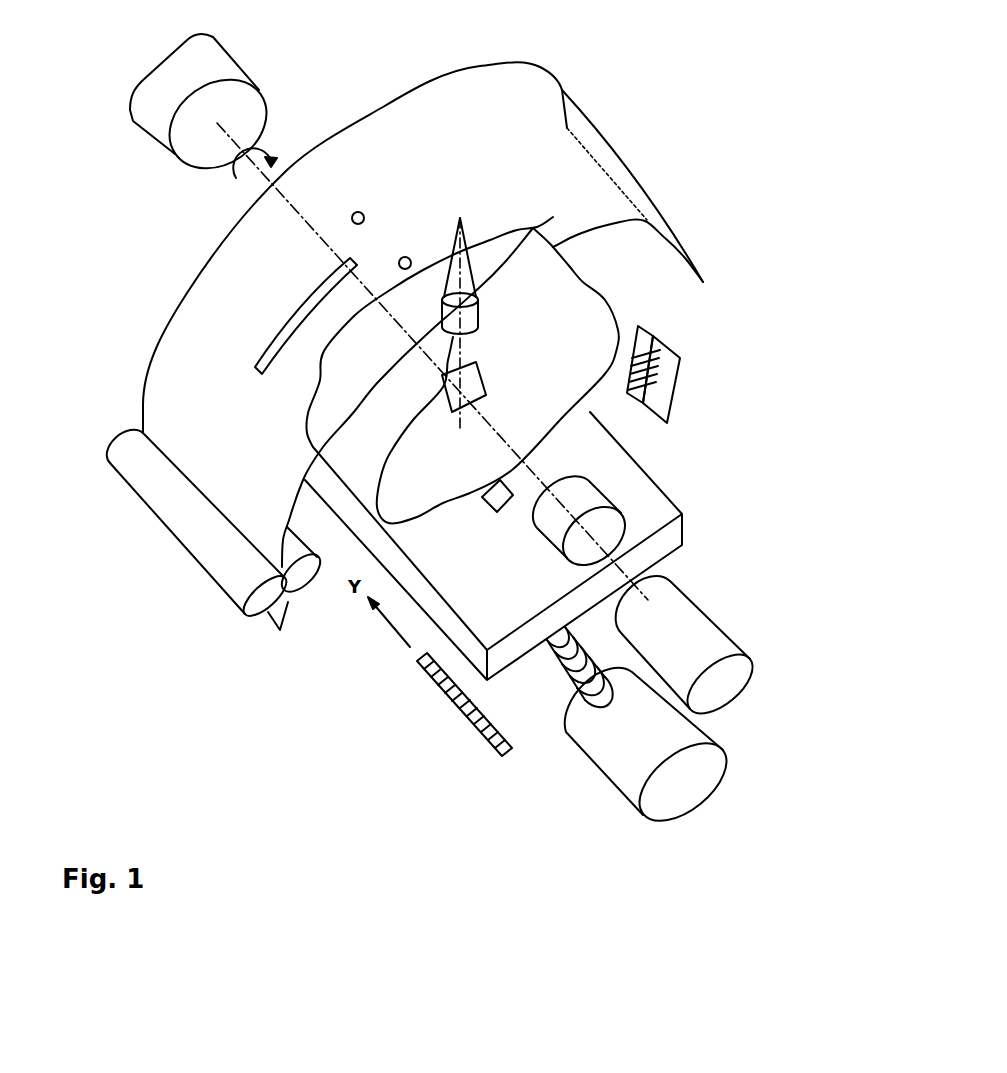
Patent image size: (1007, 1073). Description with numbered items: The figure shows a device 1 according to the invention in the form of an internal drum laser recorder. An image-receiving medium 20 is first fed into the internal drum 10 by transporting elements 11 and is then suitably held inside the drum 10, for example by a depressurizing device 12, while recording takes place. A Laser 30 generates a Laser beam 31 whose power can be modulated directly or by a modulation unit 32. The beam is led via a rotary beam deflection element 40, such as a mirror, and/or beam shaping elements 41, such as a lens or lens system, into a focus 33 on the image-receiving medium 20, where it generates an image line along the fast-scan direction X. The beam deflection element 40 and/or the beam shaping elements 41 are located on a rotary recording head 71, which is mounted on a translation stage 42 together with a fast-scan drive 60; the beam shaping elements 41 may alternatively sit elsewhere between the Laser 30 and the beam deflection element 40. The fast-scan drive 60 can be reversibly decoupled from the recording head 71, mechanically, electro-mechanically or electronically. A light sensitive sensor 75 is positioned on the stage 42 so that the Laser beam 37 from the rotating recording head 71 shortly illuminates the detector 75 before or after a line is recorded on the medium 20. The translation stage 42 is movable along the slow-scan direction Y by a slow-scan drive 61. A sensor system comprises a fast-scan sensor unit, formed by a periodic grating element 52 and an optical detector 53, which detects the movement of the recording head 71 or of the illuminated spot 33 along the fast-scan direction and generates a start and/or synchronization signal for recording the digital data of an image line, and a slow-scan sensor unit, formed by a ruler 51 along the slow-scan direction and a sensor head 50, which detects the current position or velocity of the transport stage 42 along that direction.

The device 1 is at (768, 88).
The internal drum 10 is at (223, 473).
The transporting elements 11 is at (303, 578).
The depressurizing device 12 is at (352, 220).
The image-receiving medium 20 is at (693, 250).
The Laser 30 is at (727, 682).
The Laser beam 31 is at (627, 571).
The modulation unit 32 is at (612, 522).
The focus 33 is at (460, 218).
The Laser beam 37 is at (537, 227).
The rotary beam deflection element 40 is at (487, 393).
The beam shaping elements 41 is at (480, 313).
The translation stage 42 is at (645, 497).
The sensor head 50 is at (470, 703).
The ruler 51 is at (505, 742).
The periodic grating element 52 is at (667, 384).
The optical detector 53 is at (677, 365).
The fast-scan drive 60 is at (160, 117).
The slow-scan drive 61 is at (682, 782).
The rotary recording head 71 is at (415, 497).
The light sensitive sensor 75 is at (495, 510).